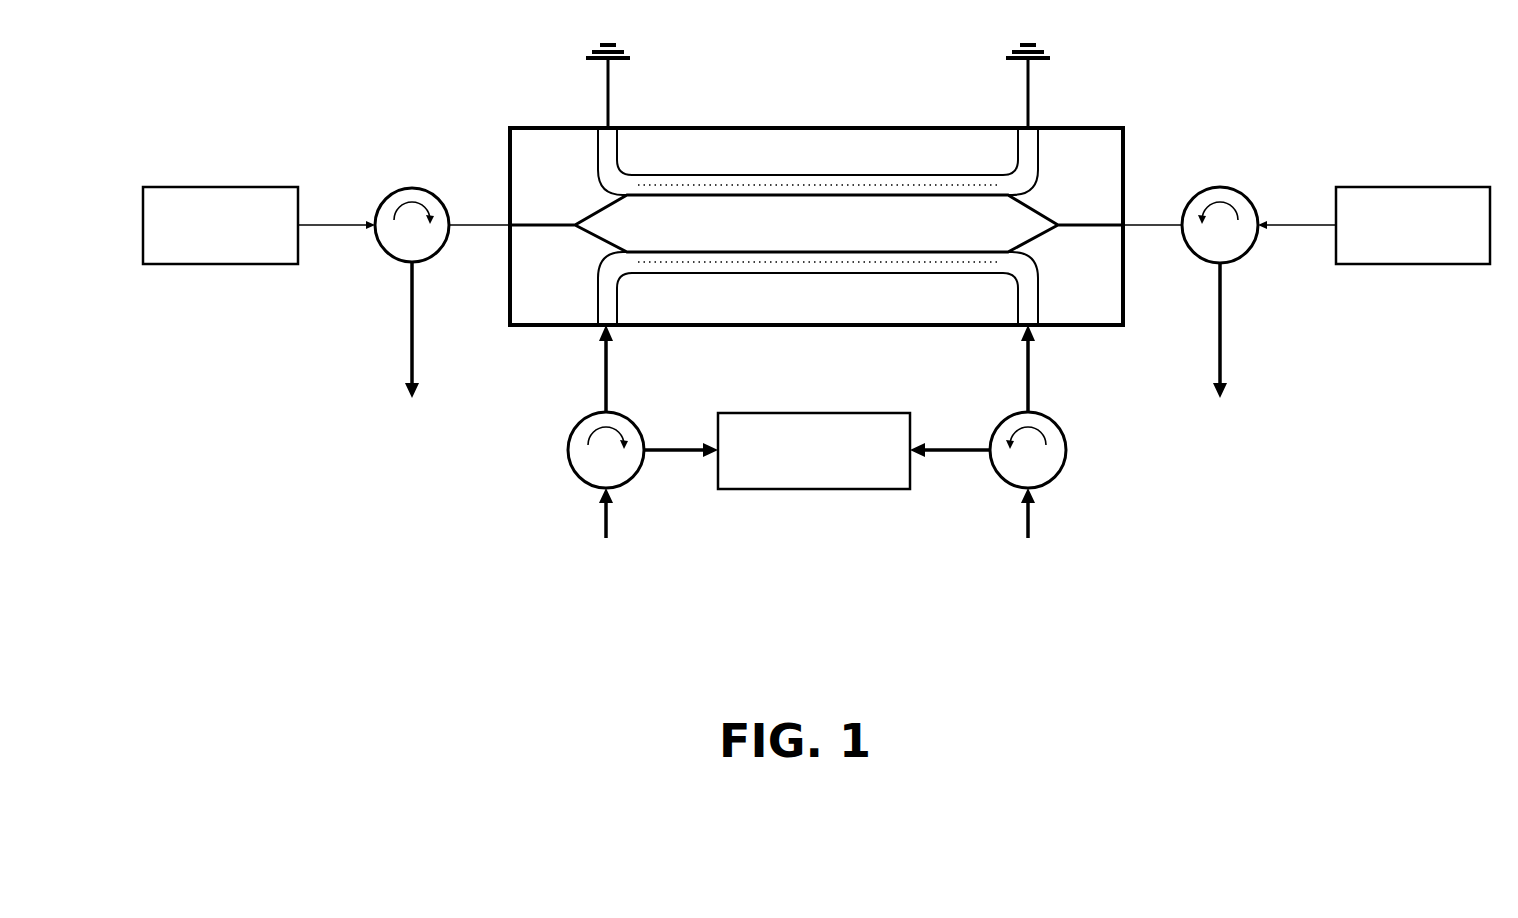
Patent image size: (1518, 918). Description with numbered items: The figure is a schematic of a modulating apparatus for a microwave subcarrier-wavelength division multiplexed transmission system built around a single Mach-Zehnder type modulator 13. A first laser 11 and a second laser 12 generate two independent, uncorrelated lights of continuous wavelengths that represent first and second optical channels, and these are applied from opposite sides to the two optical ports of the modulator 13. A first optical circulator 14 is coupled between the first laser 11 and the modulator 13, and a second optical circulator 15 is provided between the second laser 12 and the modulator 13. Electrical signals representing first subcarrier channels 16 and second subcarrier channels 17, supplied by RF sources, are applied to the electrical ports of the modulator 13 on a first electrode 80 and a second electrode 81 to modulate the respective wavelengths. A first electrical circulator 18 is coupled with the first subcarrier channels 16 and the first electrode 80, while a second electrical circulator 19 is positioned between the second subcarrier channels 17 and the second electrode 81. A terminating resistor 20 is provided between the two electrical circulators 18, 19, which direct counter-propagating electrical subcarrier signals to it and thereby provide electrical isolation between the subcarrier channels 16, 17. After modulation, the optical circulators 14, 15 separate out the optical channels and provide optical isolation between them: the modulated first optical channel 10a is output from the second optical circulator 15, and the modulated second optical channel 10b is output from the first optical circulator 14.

The modulated first optical channel 10a is at (1220, 354).
The modulated second optical channel 10b is at (412, 354).
The first laser 11 is at (220, 207).
The second laser 12 is at (1413, 207).
The Mach-Zehnder type modulator 13 is at (816, 185).
The first optical circulator 14 is at (412, 206).
The second optical circulator 15 is at (1220, 206).
The first subcarrier channels 16 is at (605, 534).
The second subcarrier channels 17 is at (1028, 534).
The first electrical circulator 18 is at (585, 450).
The second electrical circulator 19 is at (1047, 450).
The terminating resistor 20 is at (814, 470).
The first electrode 80 is at (610, 368).
The second electrode 81 is at (1032, 368).